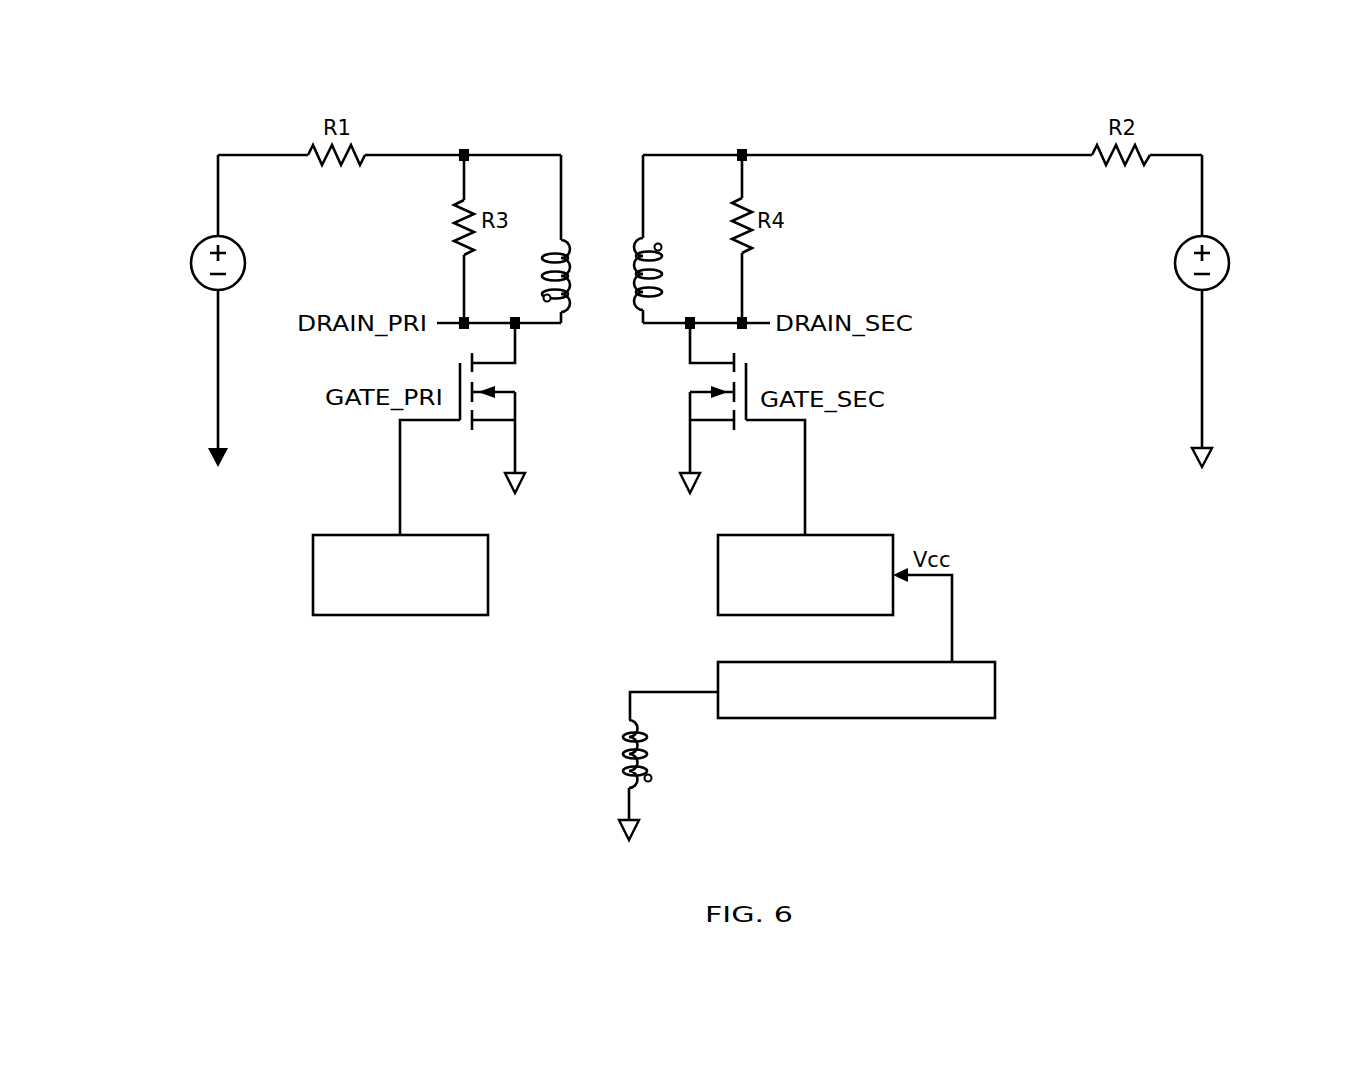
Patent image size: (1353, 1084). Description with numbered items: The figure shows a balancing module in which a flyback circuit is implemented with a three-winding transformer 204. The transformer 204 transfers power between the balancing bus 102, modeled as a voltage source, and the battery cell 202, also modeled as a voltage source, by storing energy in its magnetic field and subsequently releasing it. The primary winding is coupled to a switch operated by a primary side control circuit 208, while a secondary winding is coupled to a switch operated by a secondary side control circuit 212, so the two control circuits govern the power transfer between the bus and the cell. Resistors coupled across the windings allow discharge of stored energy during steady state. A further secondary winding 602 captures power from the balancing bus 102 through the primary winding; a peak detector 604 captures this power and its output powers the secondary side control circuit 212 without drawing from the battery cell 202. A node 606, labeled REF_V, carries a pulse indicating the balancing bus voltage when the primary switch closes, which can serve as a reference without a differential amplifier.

The balancing bus 102 is at (236, 247).
The battery cell 202 is at (1182, 248).
The transformer 204 is at (599, 152).
The primary side control circuit 208 is at (437, 535).
The secondary side control circuit 212 is at (838, 535).
The secondary winding 602 is at (626, 790).
The peak detector 604 is at (981, 662).
The node 606 is at (640, 694).